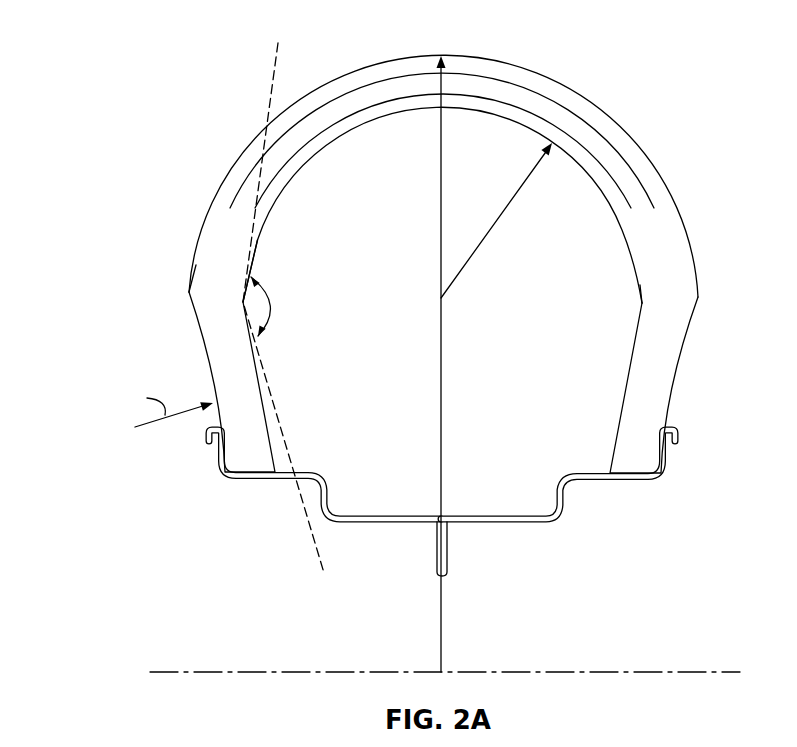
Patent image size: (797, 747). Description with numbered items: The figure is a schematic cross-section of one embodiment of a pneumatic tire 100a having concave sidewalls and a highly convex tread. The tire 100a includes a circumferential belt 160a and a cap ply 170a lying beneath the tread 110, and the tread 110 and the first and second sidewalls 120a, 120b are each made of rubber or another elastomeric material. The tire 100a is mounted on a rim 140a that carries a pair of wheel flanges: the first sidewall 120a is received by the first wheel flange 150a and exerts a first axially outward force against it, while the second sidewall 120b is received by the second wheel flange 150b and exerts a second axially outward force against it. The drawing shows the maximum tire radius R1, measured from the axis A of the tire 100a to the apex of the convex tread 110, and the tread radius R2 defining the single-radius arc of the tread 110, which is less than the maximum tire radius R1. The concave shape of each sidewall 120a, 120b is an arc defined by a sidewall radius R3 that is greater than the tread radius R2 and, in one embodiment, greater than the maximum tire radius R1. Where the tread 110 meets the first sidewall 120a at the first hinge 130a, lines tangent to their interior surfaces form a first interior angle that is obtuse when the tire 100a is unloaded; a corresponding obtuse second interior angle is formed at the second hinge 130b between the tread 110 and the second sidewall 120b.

The tire 100a is at (138, 50).
The tread 110 is at (520, 67).
The first sidewall 120a is at (203, 320).
The second sidewall 120b is at (658, 390).
The first hinge 130a is at (243, 302).
The second hinge 130b is at (640, 303).
The rim 140a is at (533, 536).
The first wheel flange 150a is at (262, 480).
The second wheel flange 150b is at (608, 481).
The circumferential belt 160a is at (628, 200).
The cap ply 170a is at (592, 127).
The maximum tire radius R1 is at (442, 620).
The tread radius R2 is at (498, 220).
The sidewall radius R3 is at (160, 414).
The axis A is at (460, 672).